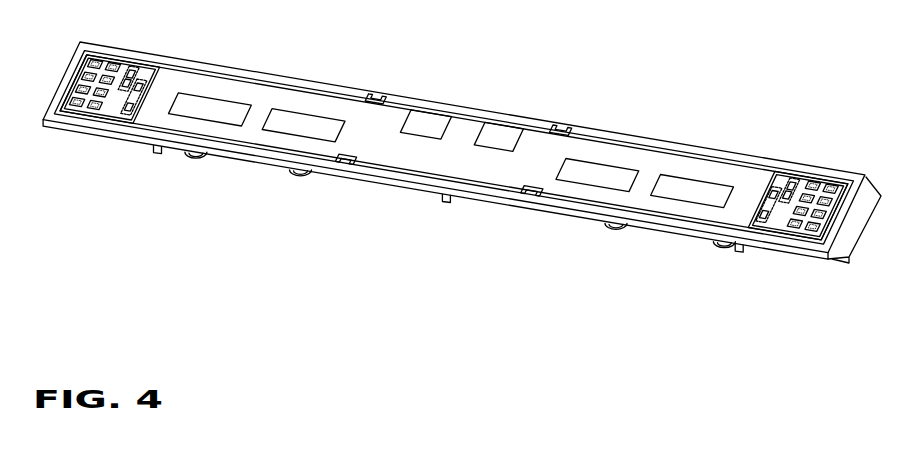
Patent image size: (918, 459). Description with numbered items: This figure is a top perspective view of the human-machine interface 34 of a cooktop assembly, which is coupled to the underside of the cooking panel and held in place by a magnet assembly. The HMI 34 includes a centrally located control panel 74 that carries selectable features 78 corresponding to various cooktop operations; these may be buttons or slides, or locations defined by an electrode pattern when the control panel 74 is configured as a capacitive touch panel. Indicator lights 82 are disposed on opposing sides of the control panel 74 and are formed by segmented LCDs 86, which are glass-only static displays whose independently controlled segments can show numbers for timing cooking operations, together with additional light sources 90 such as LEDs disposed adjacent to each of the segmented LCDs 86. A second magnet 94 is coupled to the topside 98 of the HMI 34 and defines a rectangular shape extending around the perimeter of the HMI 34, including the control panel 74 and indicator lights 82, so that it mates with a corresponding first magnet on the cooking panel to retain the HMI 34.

The human-machine interface 34 is at (745, 133).
The control panel 74 is at (238, 90).
The selectable features 78 is at (308, 117).
The indicator lights 82 is at (13, 183).
The segmented LCDs 86 is at (110, 112).
The additional light sources 90 is at (82, 108).
The second magnet 94 is at (572, 128).
The topside 98 is at (866, 175).